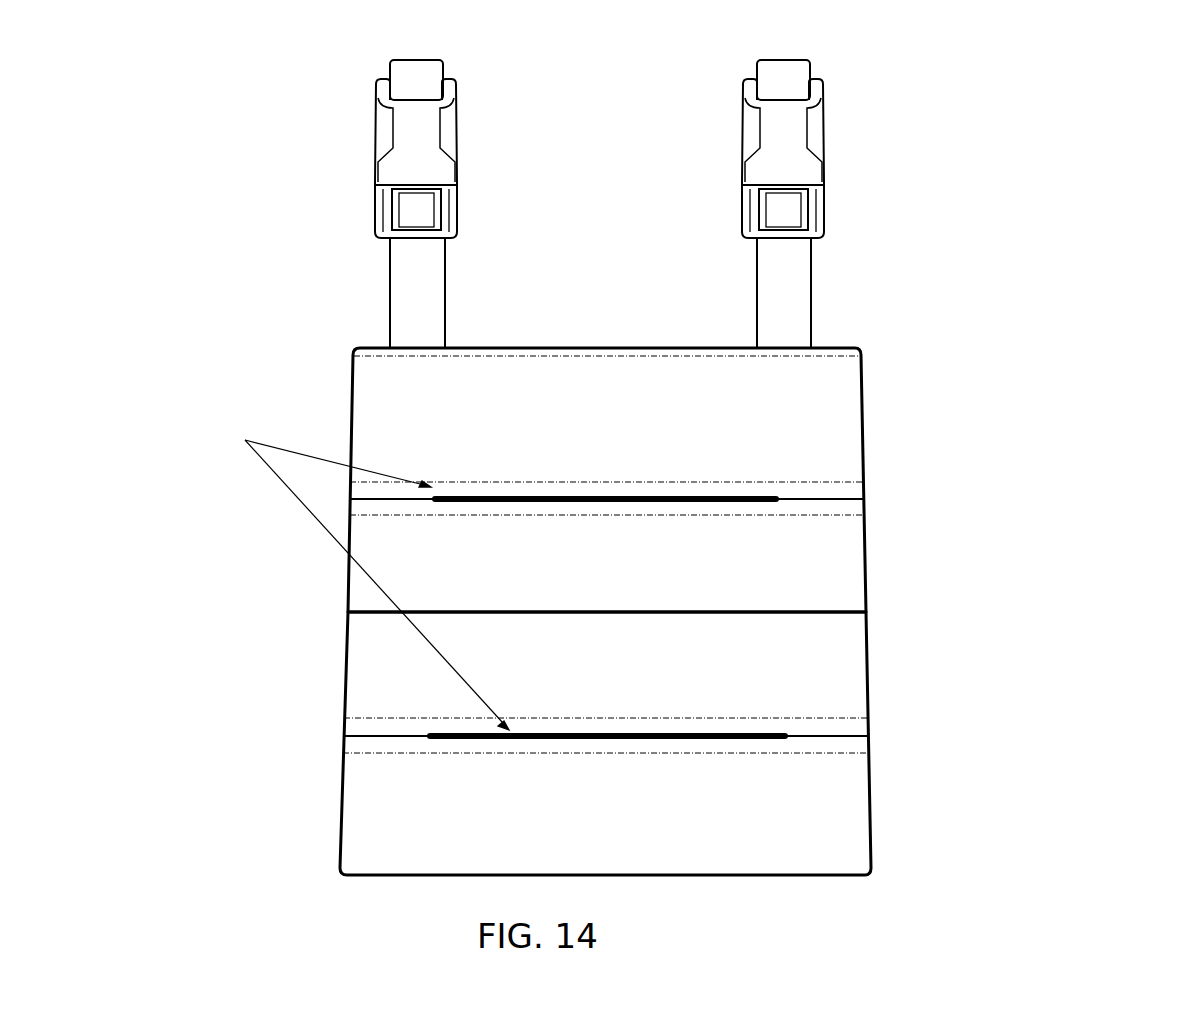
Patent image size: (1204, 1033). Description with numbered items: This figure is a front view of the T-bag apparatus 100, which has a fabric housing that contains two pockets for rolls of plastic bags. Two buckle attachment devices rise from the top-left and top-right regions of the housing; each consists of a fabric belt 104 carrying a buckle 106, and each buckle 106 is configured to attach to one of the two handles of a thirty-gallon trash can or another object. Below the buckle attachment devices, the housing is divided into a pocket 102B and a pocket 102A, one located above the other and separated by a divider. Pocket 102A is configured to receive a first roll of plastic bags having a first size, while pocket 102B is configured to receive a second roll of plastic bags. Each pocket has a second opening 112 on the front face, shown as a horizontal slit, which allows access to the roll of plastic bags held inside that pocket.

The apparatus 100 is at (672, 451).
The first pocket 102A is at (887, 796).
The second pocket 102B is at (872, 442).
The fabric belt 104 is at (452, 298).
The buckle 106 is at (453, 131).
The second opening 112 is at (703, 489).